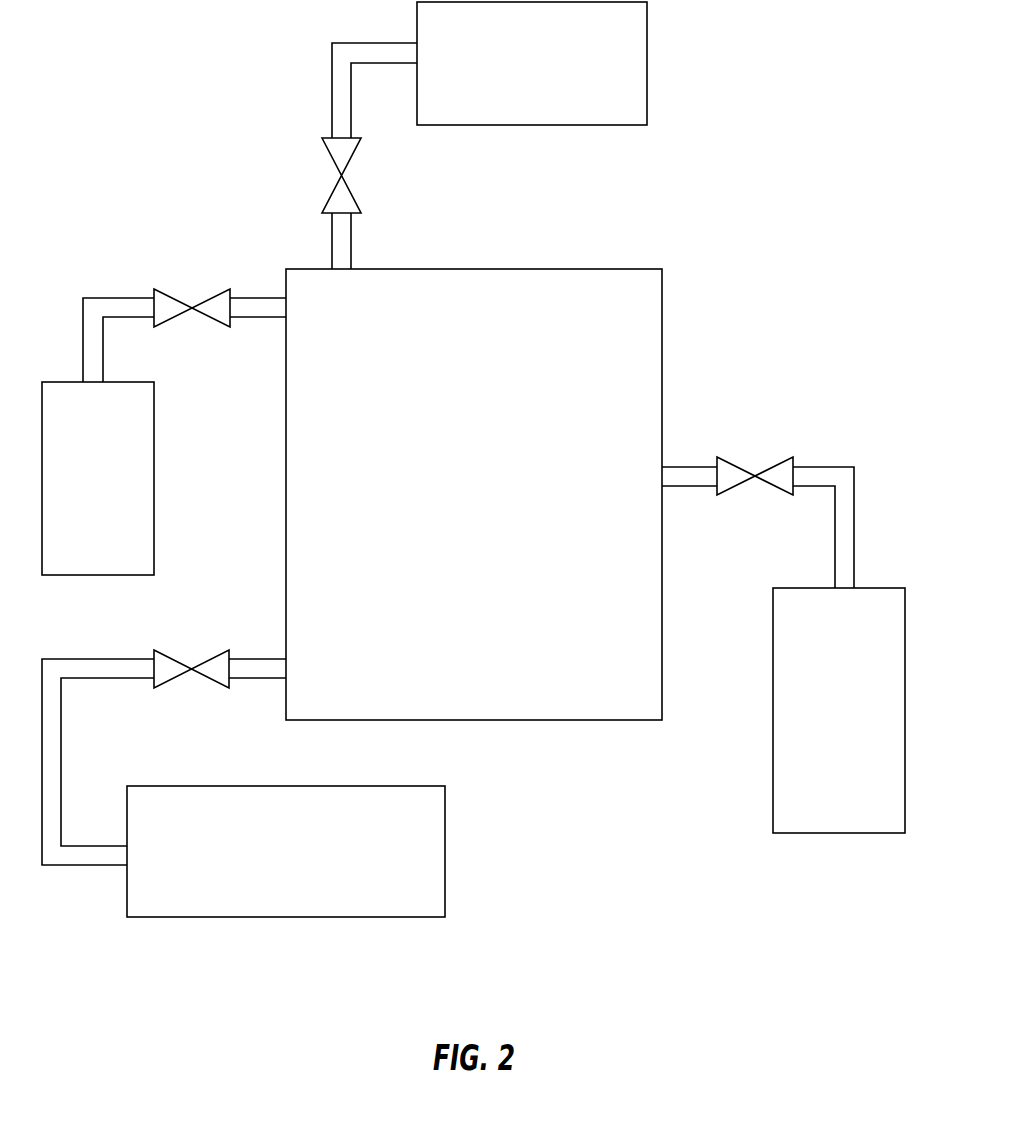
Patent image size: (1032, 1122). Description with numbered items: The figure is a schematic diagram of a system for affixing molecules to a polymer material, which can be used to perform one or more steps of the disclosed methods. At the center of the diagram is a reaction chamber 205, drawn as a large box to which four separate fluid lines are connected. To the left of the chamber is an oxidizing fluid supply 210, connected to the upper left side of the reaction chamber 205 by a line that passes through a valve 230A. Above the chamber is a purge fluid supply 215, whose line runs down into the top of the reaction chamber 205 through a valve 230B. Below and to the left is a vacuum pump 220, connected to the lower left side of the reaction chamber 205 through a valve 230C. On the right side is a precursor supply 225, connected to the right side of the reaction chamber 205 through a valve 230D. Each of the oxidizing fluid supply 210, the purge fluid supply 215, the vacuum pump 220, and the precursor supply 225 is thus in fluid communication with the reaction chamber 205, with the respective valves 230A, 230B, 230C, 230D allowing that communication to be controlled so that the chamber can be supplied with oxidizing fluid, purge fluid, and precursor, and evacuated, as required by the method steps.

The reaction chamber 205 is at (494, 507).
The oxidizing fluid supply 210 is at (119, 491).
The purge fluid supply 215 is at (553, 76).
The vacuum pump 220 is at (307, 862).
The precursor supply 225 is at (861, 722).
The valve 230A is at (213, 298).
The valve 230B is at (327, 153).
The valve 230C is at (172, 657).
The valve 230D is at (738, 465).